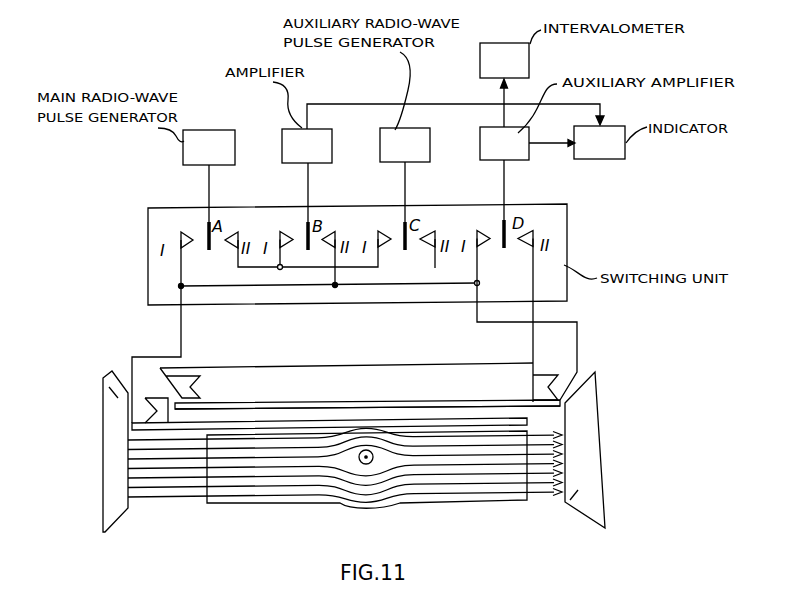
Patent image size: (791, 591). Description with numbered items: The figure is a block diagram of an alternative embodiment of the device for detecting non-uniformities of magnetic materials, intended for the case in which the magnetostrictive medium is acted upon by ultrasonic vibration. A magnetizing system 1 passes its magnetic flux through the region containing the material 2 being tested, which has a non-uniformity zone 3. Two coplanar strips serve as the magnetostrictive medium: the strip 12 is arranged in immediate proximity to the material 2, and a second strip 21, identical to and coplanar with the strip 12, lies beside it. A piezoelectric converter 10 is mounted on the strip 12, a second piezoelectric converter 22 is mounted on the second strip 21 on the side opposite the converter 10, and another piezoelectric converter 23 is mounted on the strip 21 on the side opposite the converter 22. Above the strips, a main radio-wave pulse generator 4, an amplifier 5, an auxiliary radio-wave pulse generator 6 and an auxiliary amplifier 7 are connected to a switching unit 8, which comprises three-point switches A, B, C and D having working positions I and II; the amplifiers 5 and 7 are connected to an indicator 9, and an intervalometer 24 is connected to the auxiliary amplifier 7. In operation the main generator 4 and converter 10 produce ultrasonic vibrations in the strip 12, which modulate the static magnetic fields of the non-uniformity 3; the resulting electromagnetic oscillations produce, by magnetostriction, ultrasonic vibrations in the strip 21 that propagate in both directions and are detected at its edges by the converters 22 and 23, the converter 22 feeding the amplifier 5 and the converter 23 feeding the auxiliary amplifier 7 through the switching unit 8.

The magnetizing system 1 is at (105, 380).
The material being tested 2 is at (312, 445).
The non-uniformity zone 3 is at (370, 452).
The main radio-wave pulse generator 4 is at (209, 147).
The amplifier 5 is at (307, 146).
The auxiliary radio-wave pulse generator 6 is at (405, 145).
The auxiliary amplifier 7 is at (504, 143).
The switching unit 8 is at (563, 233).
The indicator 9 is at (599, 142).
The piezoelectric converter 10 is at (161, 392).
The strip 12 is at (238, 427).
The second strip 21 is at (277, 413).
The second piezoelectric converter 22 is at (538, 388).
The piezoelectric converter 23 is at (200, 392).
The intervalometer 24 is at (504, 60).